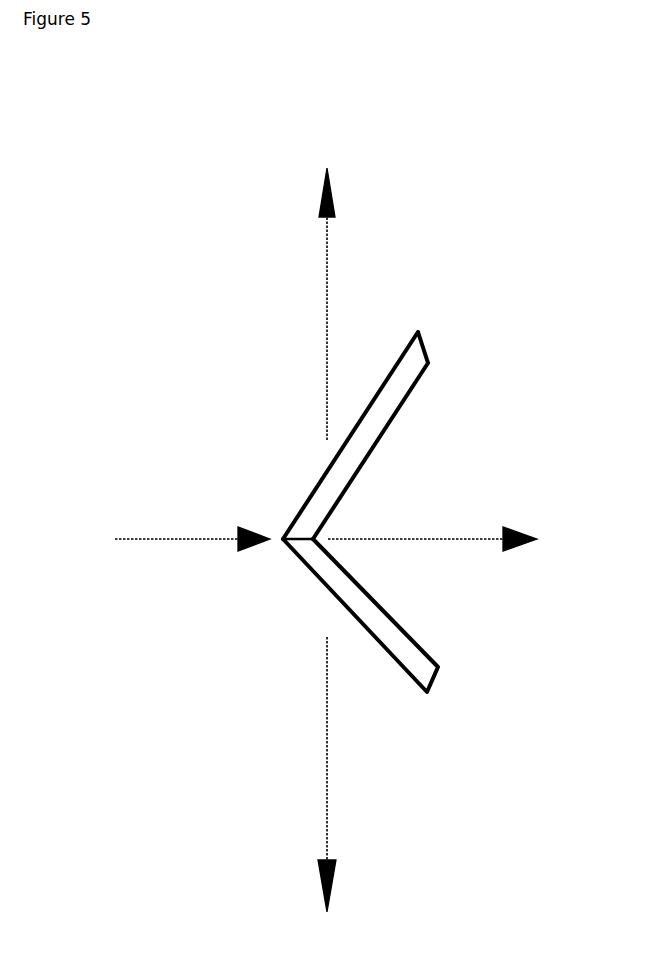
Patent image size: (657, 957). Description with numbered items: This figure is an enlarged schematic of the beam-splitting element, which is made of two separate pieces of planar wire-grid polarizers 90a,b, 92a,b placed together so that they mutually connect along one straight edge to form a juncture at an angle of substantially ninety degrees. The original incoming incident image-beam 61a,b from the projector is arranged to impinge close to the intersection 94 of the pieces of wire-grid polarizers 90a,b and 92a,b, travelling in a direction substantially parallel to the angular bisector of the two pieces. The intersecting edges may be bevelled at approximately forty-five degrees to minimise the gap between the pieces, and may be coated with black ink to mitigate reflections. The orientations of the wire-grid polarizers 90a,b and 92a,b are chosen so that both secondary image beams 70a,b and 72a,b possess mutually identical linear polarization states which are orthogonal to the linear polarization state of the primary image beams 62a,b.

The incoming incident image-beam 61a,b is at (185, 522).
The primary image beams 62a,b is at (492, 518).
The secondary image beam 70a,b is at (332, 277).
The secondary image beam 72a,b is at (307, 778).
The planar wire-grid polarizer 90a,b is at (508, 312).
The planar wire-grid polarizer 92a,b is at (458, 703).
The intersection 94 is at (274, 558).